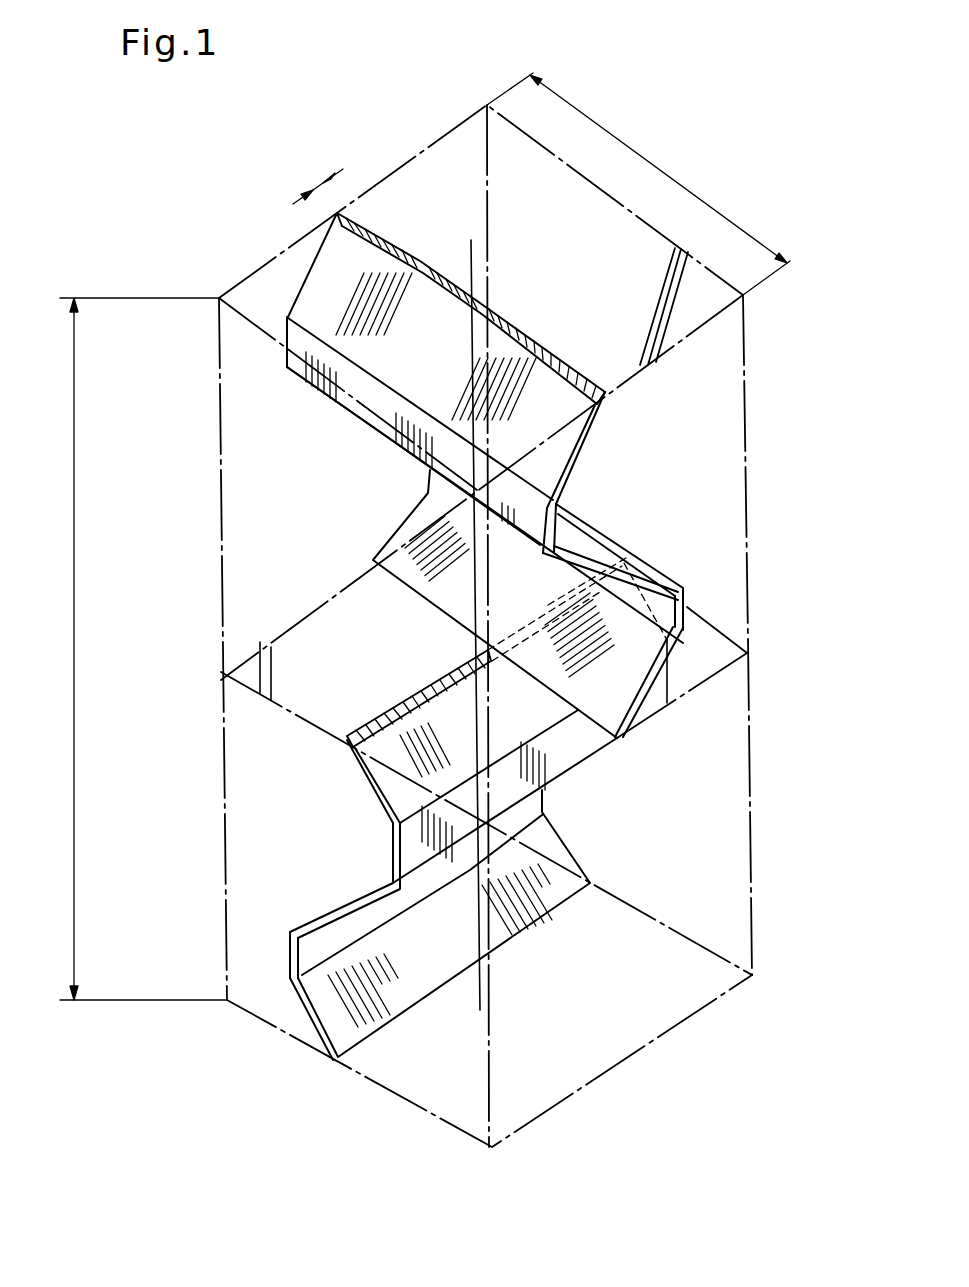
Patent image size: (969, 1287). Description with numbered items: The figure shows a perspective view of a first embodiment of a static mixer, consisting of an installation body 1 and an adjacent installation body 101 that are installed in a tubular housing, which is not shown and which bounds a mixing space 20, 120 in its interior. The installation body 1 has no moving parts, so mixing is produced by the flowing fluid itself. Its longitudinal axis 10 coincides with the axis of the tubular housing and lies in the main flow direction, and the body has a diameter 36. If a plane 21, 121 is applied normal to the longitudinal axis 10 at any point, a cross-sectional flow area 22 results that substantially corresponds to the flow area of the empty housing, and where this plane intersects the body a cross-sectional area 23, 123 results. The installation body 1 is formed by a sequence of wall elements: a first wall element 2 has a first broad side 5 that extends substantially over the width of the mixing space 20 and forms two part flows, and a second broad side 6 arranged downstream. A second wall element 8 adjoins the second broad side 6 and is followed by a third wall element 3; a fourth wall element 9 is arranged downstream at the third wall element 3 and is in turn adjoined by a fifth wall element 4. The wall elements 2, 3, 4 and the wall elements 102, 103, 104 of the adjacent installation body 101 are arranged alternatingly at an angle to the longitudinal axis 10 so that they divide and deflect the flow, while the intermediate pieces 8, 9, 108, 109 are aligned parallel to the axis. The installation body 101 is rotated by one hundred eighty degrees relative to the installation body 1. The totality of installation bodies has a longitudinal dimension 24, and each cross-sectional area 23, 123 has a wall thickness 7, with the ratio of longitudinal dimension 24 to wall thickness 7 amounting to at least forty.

The installation body 1 is at (332, 283).
The first wall element 2 is at (573, 470).
The third wall element 3 is at (637, 542).
The fifth wall element 4 is at (373, 550).
The first broad side 5 is at (413, 250).
The second broad side 6 is at (388, 440).
The wall thickness 7 is at (338, 172).
The second wall element 8 is at (317, 388).
The fourth wall element 9 is at (687, 602).
The longitudinal axis 10 is at (471, 283).
The mixing space 20 is at (728, 424).
The plane 21 is at (673, 300).
The cross-sectional flow area 22 is at (672, 307).
The cross-sectional area 23 is at (368, 223).
The longitudinal dimension 24 is at (78, 600).
The diameter 36 is at (680, 188).
The adjacent installation body 101 is at (305, 893).
The wall element 102 is at (375, 764).
The wall element 103 is at (320, 913).
The wall element 104 is at (323, 1015).
The intermediate piece 108 is at (560, 763).
The intermediate piece 109 is at (297, 950).
The mixing space 120 is at (728, 822).
The plane 121 is at (222, 676).
The cross-sectional area 123 is at (390, 708).